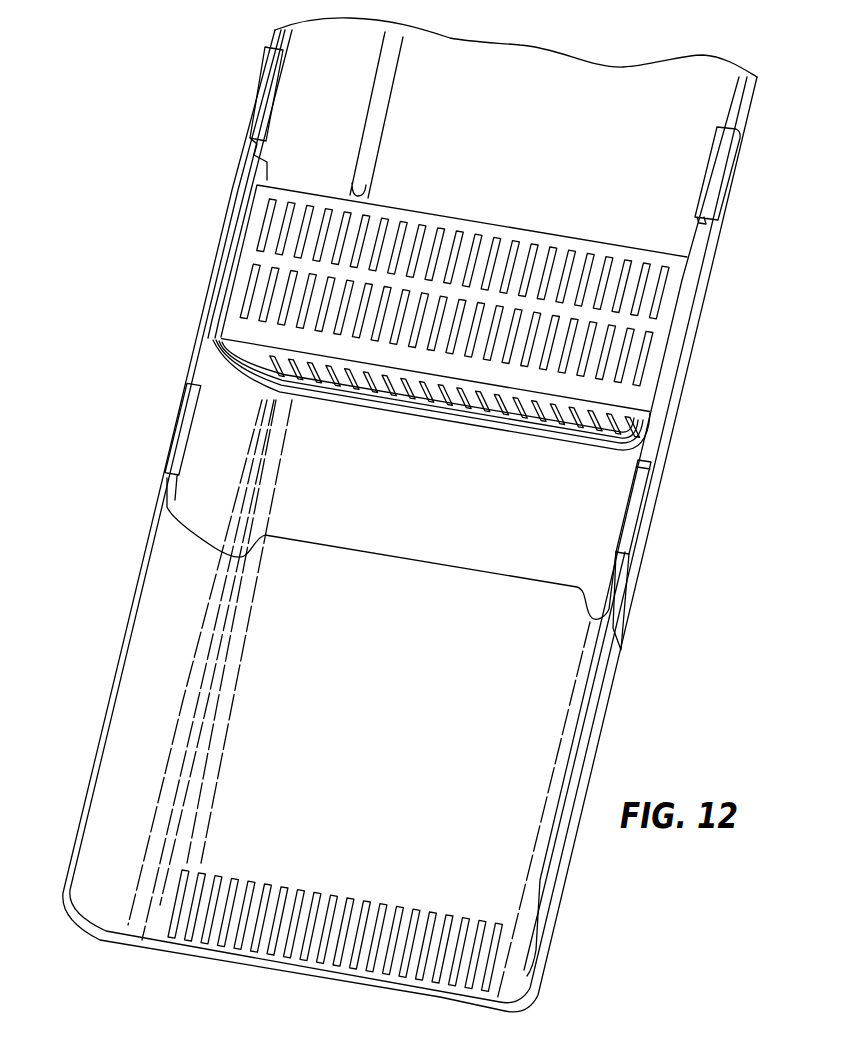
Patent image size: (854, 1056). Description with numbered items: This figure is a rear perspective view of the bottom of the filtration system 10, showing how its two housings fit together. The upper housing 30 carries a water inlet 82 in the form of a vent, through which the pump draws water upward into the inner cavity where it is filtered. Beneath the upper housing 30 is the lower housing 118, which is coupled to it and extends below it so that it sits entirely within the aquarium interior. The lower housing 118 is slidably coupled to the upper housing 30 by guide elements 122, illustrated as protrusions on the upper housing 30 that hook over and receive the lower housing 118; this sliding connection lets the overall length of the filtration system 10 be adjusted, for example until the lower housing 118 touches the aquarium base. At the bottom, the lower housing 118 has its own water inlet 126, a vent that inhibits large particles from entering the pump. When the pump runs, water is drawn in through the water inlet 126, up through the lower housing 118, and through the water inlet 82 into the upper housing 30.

The filtration system 10 is at (222, 87).
The upper housing 30 is at (229, 458).
The water inlet 82 is at (582, 440).
The lower housing 118 is at (150, 733).
The guide elements 122 is at (187, 432).
The water inlet 126 is at (330, 937).